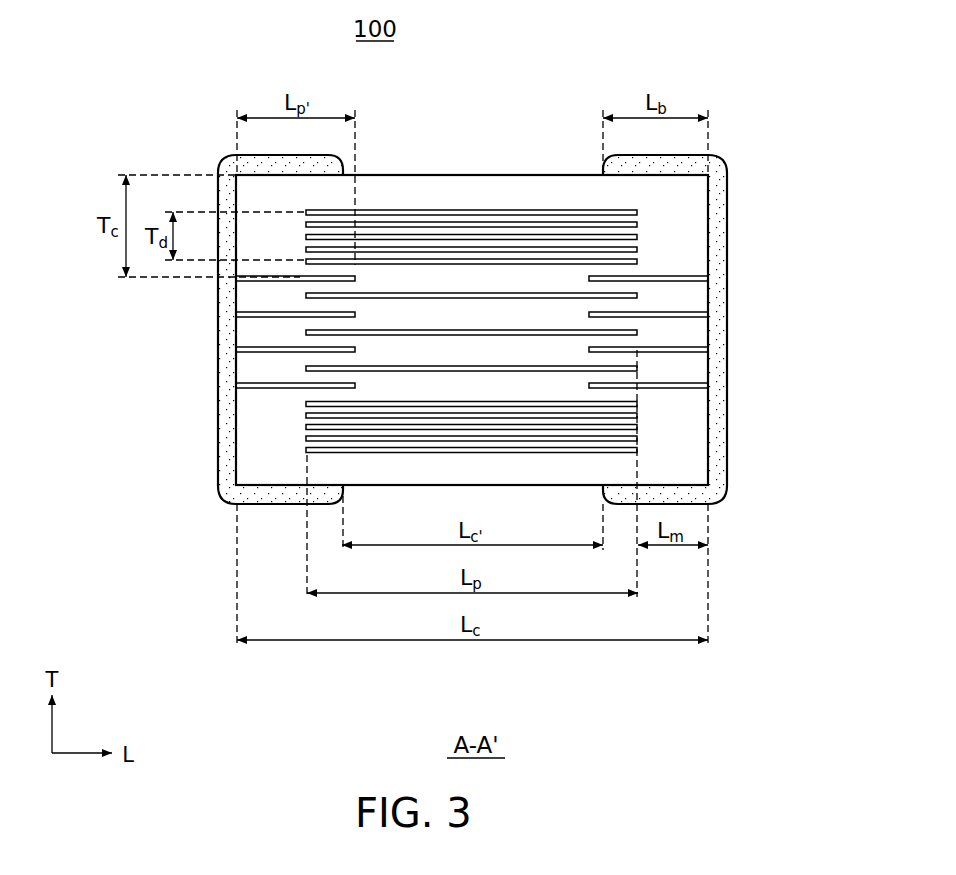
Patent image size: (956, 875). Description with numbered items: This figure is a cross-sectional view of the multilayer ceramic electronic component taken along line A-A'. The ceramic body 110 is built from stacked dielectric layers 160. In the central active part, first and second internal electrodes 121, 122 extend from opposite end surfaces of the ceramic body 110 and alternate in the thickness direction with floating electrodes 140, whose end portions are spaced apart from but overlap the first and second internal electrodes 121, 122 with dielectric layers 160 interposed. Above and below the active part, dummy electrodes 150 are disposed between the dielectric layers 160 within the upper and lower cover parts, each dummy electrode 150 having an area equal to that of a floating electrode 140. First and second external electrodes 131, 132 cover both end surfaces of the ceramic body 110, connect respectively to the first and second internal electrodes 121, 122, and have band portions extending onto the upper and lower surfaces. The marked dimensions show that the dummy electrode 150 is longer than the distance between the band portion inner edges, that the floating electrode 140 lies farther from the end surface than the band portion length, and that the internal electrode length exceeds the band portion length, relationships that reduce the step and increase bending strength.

The ceramic body 110 is at (468, 168).
The first internal electrode 121 is at (268, 386).
The second internal electrode 122 is at (677, 386).
The first external electrode 131 is at (258, 164).
The second external electrode 132 is at (688, 163).
The floating electrode 140 is at (617, 298).
The dummy electrode 150 is at (613, 212).
The dielectric layer 160 is at (617, 233).